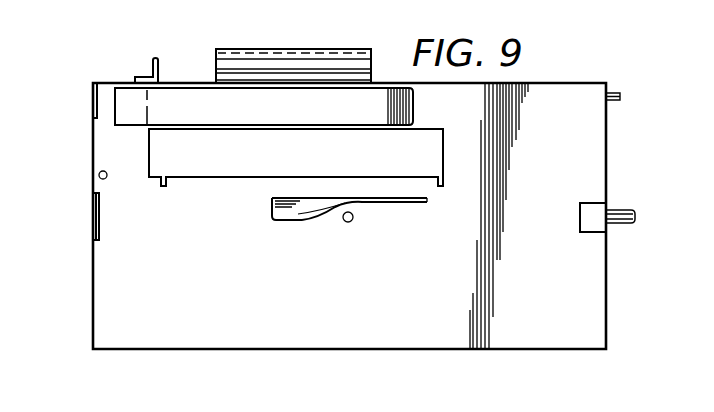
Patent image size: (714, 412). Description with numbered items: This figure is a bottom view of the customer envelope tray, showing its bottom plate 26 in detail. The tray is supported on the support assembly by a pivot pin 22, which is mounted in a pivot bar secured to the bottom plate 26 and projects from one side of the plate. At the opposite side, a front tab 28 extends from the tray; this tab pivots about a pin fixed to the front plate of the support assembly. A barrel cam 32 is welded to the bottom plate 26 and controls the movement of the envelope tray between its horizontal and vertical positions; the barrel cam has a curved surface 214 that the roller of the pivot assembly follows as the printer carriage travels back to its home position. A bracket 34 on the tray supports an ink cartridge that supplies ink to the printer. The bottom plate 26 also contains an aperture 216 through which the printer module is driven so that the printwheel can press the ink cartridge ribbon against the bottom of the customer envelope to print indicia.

The pivot pin 22 is at (626, 217).
The bottom plate 26 is at (244, 330).
The front tab 28 is at (93, 221).
The barrel cam 32 is at (272, 207).
The bracket 34 is at (322, 48).
The curved surface 214 is at (332, 207).
The aperture 216 is at (306, 162).